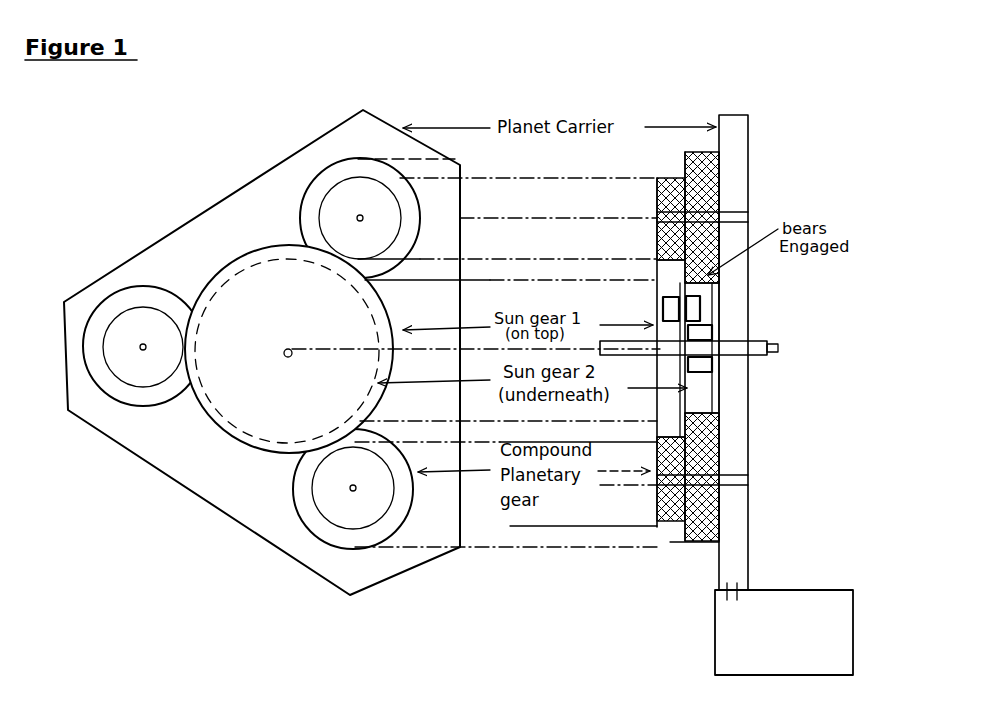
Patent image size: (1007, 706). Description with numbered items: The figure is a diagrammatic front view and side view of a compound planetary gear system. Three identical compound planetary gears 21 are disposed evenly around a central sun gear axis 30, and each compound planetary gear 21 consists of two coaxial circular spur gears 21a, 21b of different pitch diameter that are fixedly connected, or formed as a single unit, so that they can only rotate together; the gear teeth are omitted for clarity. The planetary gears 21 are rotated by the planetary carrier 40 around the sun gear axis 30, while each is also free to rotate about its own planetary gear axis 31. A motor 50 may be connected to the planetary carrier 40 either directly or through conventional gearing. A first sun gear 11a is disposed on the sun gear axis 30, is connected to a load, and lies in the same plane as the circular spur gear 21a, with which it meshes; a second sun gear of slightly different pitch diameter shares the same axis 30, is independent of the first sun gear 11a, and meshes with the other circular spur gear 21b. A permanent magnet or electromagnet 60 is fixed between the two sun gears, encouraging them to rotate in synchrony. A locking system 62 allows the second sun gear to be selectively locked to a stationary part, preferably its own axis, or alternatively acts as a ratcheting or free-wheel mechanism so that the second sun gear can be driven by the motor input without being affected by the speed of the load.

The first sun gear 11a is at (668, 417).
The compound planetary gear 21 is at (713, 563).
The first coaxial circular spur gear 21a is at (616, 279).
The second coaxial circular spur gear 21b is at (650, 272).
The sun gear axis 30 is at (731, 315).
The planetary gear axis 31 is at (742, 186).
The planetary carrier 40 is at (771, 332).
The motor 50 is at (784, 632).
The permanent magnet or electromagnet 60 is at (685, 296).
The locking system 62 is at (743, 326).